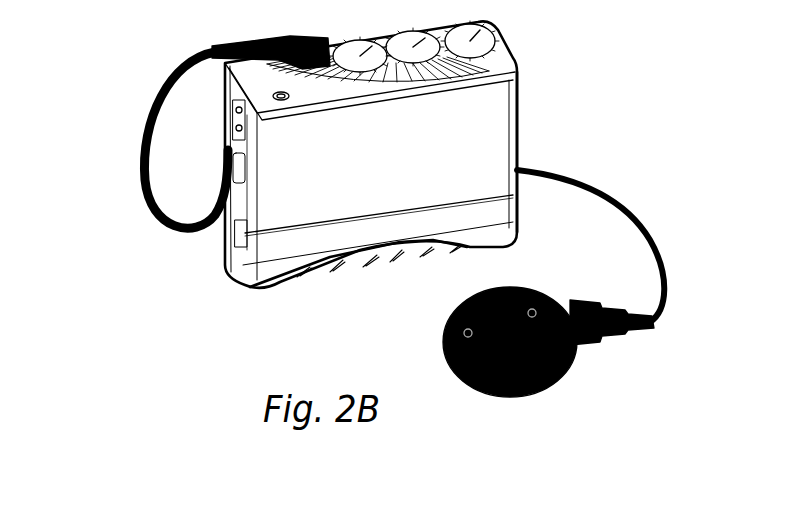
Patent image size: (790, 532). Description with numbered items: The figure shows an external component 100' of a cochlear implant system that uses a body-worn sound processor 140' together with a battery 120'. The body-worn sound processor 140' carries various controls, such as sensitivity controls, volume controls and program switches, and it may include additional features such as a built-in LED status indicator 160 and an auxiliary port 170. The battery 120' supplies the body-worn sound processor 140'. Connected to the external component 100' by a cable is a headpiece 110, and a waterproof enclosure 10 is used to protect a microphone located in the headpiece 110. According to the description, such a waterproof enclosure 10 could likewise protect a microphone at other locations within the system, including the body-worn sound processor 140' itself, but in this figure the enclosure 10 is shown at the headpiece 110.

The external component 100' is at (347, 218).
The battery 120' is at (182, 200).
The body-worn sound processor 140' is at (569, 152).
The built-in LED status indicator 160 is at (278, 95).
The auxiliary port 170 is at (225, 118).
The waterproof enclosure 10 is at (452, 333).
The headpiece 110 is at (535, 311).